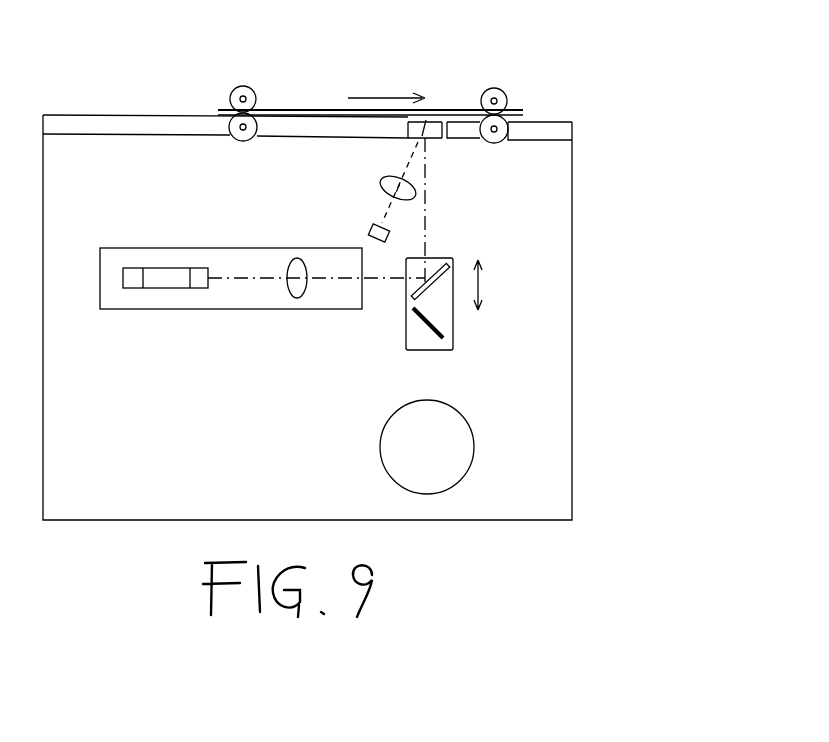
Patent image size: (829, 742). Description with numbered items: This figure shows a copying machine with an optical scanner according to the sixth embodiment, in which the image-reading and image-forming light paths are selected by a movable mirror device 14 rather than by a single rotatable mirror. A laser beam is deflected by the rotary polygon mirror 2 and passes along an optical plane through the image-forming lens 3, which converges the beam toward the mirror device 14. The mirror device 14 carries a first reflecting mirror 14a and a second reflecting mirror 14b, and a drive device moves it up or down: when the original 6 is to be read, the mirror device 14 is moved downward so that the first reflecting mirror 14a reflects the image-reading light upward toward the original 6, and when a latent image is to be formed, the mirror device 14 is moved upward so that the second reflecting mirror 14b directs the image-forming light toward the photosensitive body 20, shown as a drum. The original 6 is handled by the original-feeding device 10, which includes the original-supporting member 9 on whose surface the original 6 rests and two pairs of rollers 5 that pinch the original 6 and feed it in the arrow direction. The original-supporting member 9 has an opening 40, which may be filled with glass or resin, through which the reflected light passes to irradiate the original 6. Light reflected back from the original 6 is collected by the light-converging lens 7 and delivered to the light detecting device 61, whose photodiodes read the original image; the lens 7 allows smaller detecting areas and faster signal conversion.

The rotary polygon mirror 2 is at (162, 288).
The image-forming lens 3 is at (283, 300).
The rollers 5 is at (251, 91).
The original 6 is at (290, 110).
The light-converging lens 7 is at (382, 180).
The original-supporting member 9 is at (573, 130).
The original-feeding device 10 is at (533, 110).
The mirror device 14 is at (465, 251).
The first reflecting mirror 14a is at (452, 263).
The second reflecting mirror 14b is at (440, 328).
The photosensitive body 20 is at (380, 440).
The opening 40 is at (442, 140).
The light detecting device 61 is at (372, 228).